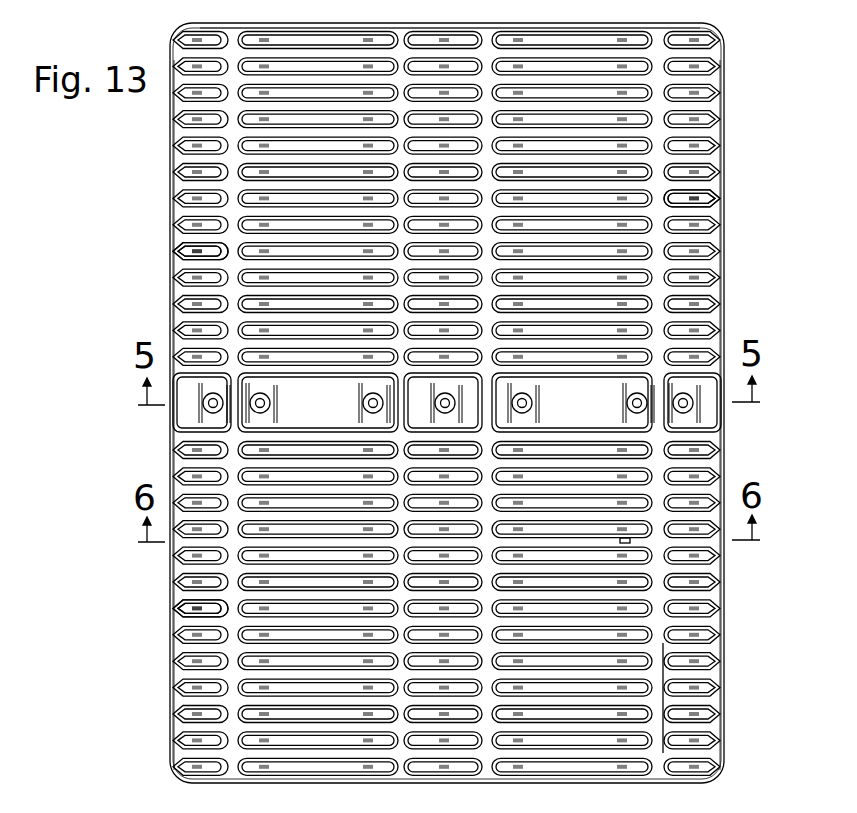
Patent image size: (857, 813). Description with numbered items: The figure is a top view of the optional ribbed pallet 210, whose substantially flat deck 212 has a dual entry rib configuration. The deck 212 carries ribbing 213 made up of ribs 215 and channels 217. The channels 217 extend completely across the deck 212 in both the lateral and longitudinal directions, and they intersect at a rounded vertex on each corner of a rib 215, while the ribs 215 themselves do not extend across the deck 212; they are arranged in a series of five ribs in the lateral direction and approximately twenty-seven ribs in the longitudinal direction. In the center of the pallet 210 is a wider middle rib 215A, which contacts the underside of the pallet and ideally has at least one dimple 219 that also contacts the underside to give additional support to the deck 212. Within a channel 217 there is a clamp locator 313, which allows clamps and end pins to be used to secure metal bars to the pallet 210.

The ribbed pallet 210 is at (223, 172).
The deck 212 is at (207, 260).
The ribbing 213 is at (177, 619).
The ribs 215 is at (700, 194).
The middle rib 215A is at (598, 411).
The channels 217 is at (724, 130).
The dimple 219 is at (205, 405).
The clamp locator 313 is at (630, 544).